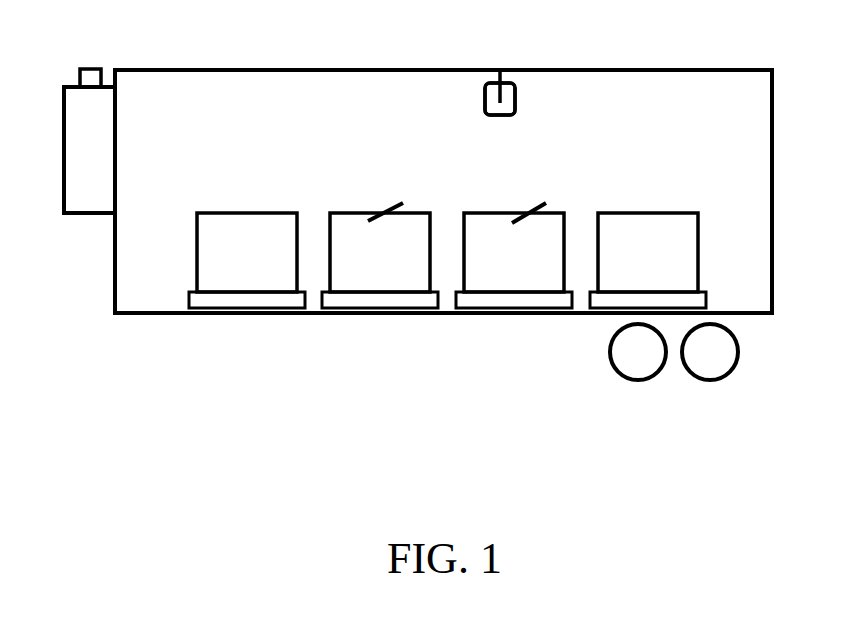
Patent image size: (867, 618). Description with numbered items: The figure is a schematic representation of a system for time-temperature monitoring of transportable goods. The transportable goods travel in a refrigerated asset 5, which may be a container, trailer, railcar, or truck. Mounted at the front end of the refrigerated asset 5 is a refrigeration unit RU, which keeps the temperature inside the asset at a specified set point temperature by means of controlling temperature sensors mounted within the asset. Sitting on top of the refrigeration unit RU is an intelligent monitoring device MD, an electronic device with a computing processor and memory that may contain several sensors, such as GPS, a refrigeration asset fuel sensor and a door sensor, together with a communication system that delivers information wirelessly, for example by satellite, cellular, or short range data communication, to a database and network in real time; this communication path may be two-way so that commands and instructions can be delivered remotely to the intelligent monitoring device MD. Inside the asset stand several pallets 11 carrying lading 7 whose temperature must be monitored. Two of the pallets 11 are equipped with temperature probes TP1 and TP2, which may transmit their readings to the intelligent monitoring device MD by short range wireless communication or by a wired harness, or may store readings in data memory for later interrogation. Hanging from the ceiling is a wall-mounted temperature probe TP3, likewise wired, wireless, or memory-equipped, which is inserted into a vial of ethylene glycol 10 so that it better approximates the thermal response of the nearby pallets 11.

The refrigerated asset 5 is at (174, 320).
The refrigeration unit RU is at (98, 219).
The intelligent monitoring device MD is at (92, 63).
The lading 7 is at (633, 207).
The pallets 11 is at (612, 322).
The temperature probe TP1 is at (379, 228).
The temperature probe TP2 is at (526, 225).
The wall-mounted temperature probe TP3 is at (512, 74).
The ethylene glycol 10 is at (512, 118).